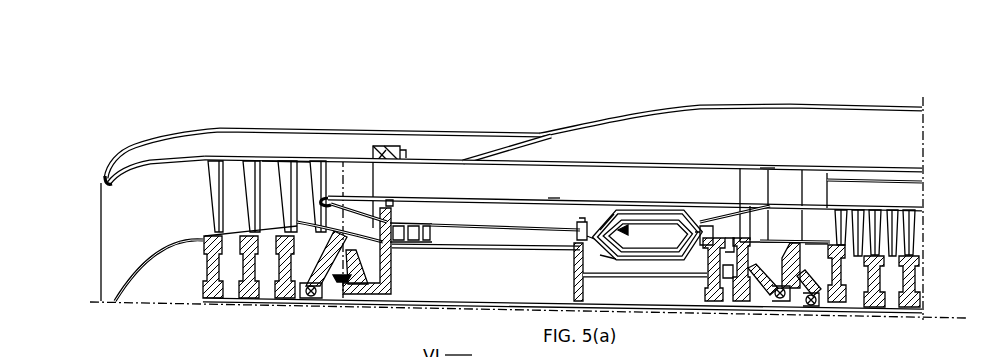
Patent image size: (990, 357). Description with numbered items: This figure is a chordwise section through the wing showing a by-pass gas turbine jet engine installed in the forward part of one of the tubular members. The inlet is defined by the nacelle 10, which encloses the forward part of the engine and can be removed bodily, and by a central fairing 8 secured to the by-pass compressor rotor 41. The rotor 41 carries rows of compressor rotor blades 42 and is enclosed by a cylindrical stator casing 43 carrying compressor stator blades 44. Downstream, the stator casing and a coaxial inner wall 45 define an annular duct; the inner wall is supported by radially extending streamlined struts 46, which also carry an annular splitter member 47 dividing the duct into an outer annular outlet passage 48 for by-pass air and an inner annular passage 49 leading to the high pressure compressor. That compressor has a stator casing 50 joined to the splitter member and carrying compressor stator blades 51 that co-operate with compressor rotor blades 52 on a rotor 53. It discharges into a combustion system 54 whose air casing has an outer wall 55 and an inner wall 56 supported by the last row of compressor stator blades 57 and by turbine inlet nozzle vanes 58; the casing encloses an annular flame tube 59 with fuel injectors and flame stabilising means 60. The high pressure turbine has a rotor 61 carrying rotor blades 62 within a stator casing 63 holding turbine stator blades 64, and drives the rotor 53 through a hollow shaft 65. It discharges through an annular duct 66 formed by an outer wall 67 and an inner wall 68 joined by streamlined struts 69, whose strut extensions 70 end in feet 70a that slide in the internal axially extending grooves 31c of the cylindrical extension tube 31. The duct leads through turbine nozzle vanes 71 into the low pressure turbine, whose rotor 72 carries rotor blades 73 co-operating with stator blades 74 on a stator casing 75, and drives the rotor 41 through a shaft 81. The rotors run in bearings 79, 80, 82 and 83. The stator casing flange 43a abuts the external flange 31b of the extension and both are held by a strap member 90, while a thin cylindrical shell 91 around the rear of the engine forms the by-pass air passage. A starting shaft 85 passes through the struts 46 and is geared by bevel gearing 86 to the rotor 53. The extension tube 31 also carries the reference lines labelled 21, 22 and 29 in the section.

The central fairing 8 is at (153, 256).
The nacelle 10 is at (323, 129).
The engine axis 21 is at (528, 329).
The shaft 22 is at (772, 299).
The fan duct outer wall 29 is at (640, 113).
The cylindrical extension tube 31 is at (647, 164).
The external flange 31b is at (401, 153).
The internal axially extending grooves 31c is at (536, 164).
The by-pass compressor rotor 41 is at (245, 288).
The compressor rotor blades 42 is at (283, 207).
The stator casing 43 is at (233, 164).
The external flange 43a is at (378, 146).
The compressor stator blades 44 is at (307, 166).
The inner wall 45 is at (326, 229).
The radially extending streamlined struts 46 is at (353, 160).
The annular splitter member 47 is at (336, 199).
The outer annular outlet passage 48 is at (625, 192).
The inner annular passage 49 is at (393, 227).
The high pressure compressor stator casing 50 is at (484, 226).
The compressor stator blades 51 is at (432, 228).
The compressor rotor blades 52 is at (413, 241).
The high pressure compressor rotor 53 is at (487, 250).
The combustion system 54 is at (668, 243).
The outer wall 55 is at (637, 209).
The inner wall 56 is at (665, 262).
The last row of compressor stator blades 57 is at (588, 222).
The turbine inlet nozzle vanes 58 is at (703, 246).
The annular flame tube 59 is at (618, 209).
The fuel injectors and flame stabilising means 60 is at (621, 237).
The high pressure turbine rotor 61 is at (710, 302).
The rotor blades 62 is at (747, 243).
The stator casing 63 is at (740, 168).
The turbine stator blades 64 is at (729, 216).
The hollow shaft 65 is at (640, 271).
The annular duct 66 is at (757, 206).
The outer wall 67 is at (812, 207).
The inner wall 68 is at (800, 283).
The radially extending streamlined struts 69 is at (795, 240).
The strut extensions 70 is at (797, 198).
The feet 70a is at (767, 168).
The turbine nozzle vanes 71 is at (817, 245).
The low pressure turbine rotor 72 is at (902, 306).
The rotor blades 73 is at (904, 256).
The stator blades 74 is at (866, 207).
The stator casing 75 is at (835, 207).
The bearing 79 is at (360, 295).
The bearing 80 is at (779, 299).
The shaft 81 is at (510, 308).
The bearings 82 is at (310, 299).
The bearings 83 is at (812, 306).
The starting shaft 85 is at (400, 183).
The bevel gearing 86 is at (343, 290).
The strap member 90 is at (393, 146).
The cylindrical shell or casing 91 is at (552, 198).